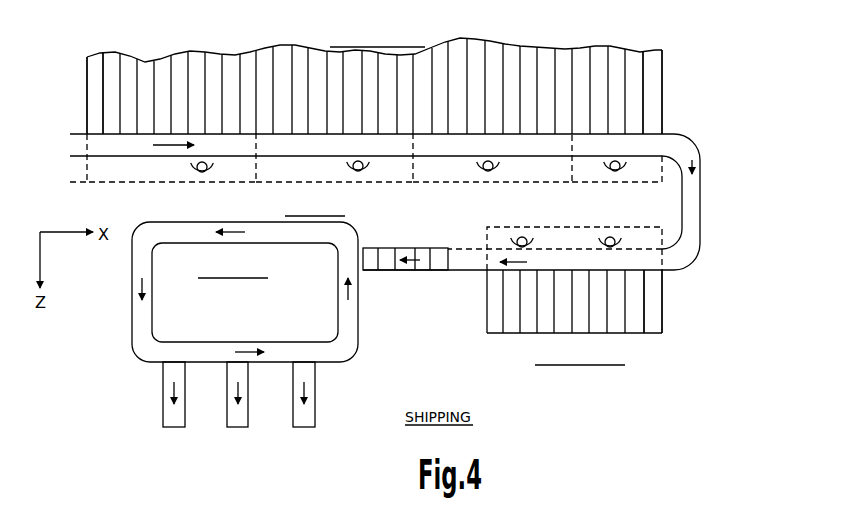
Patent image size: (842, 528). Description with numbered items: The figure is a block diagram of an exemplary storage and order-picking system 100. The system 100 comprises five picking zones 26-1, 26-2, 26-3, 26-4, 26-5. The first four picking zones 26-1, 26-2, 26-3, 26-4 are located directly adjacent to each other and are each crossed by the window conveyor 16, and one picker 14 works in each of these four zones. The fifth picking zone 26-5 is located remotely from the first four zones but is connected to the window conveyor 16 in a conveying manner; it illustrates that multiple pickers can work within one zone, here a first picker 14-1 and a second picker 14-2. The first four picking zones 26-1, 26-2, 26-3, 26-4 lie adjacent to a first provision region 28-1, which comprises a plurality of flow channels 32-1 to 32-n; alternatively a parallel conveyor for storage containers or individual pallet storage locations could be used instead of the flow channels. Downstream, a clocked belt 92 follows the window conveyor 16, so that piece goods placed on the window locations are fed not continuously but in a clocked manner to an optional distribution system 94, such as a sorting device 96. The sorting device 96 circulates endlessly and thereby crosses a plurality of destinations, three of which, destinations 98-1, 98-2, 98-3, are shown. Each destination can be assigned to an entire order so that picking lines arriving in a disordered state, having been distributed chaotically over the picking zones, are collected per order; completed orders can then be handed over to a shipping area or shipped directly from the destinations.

The storage and order-picking system 100 is at (590, 40).
The first provision region 28-1 is at (276, 39).
The flow channel 32-1 is at (86, 84).
The flow channel 32-n is at (663, 80).
The window conveyor 16 is at (68, 149).
The picker 14 is at (191, 177).
The first picker 14-1 is at (513, 235).
The second picker 14-2 is at (597, 235).
The picking zone 26-1 is at (100, 183).
The picking zone 26-2 is at (256, 187).
The picking zone 26-3 is at (440, 185).
The picking zone 26-4 is at (596, 184).
The fifth picking zone 26-5 is at (612, 228).
The clocked belt 92 is at (452, 272).
The distribution system 94 is at (248, 313).
The sorting device 96 is at (130, 292).
The destination 98-1 is at (172, 428).
The destination 98-2 is at (235, 428).
The destination 98-3 is at (300, 428).